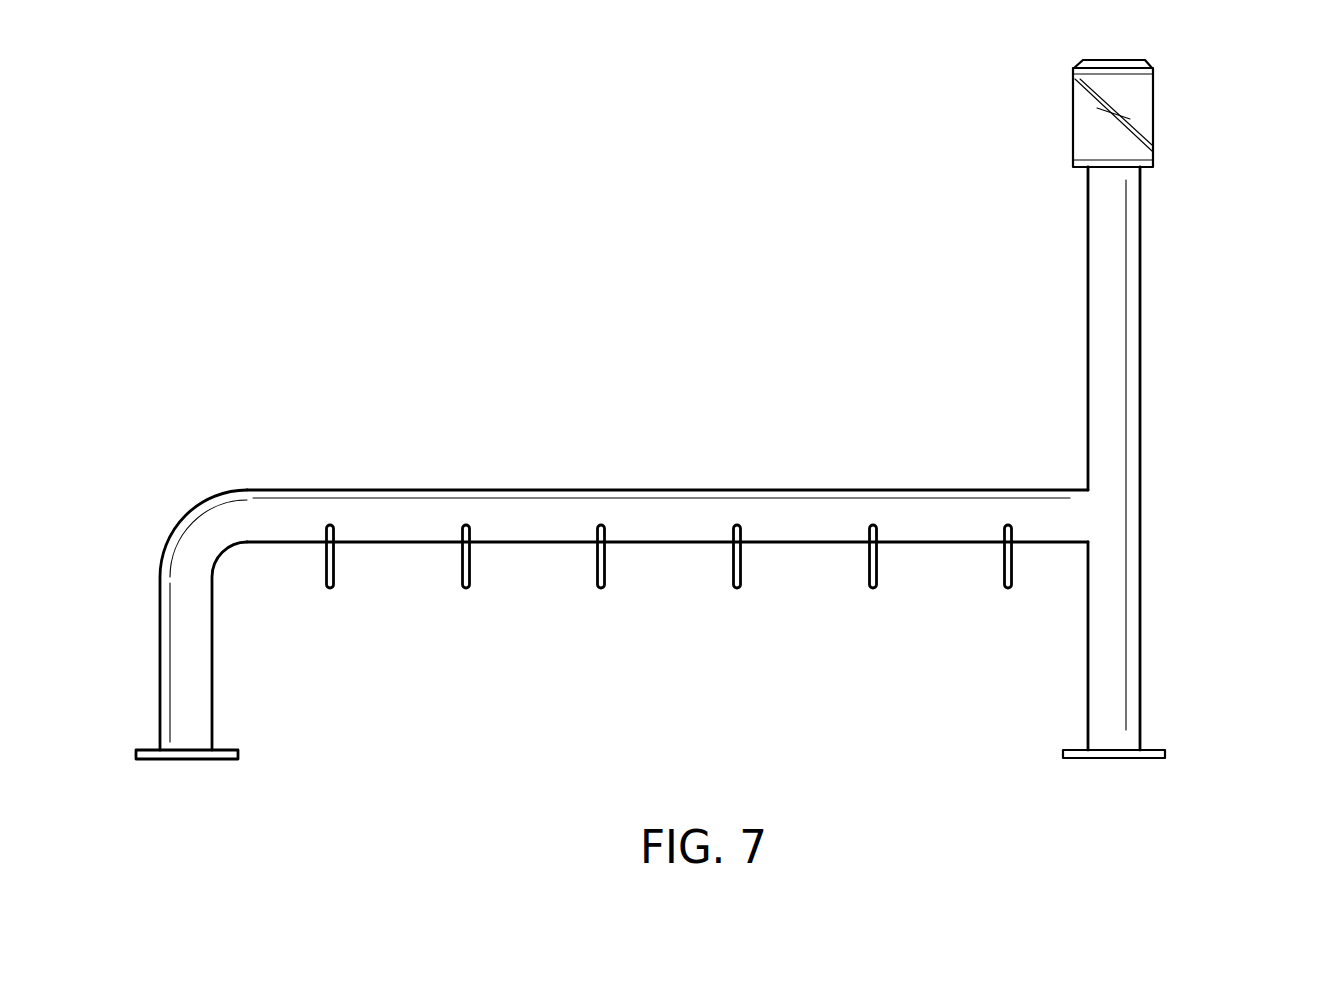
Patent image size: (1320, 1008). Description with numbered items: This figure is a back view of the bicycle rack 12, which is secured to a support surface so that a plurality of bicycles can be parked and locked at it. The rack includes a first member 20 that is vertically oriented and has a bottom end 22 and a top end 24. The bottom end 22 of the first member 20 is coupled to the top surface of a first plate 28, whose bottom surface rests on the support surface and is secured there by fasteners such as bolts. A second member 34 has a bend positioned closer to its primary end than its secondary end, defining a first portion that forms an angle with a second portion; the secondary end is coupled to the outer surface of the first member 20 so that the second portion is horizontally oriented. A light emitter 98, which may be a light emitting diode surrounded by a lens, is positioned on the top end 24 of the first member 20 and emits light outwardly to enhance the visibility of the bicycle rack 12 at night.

The bicycle rack 12 is at (185, 516).
The second member 34 is at (755, 490).
The first member 20 is at (1140, 385).
The top end 24 is at (1108, 166).
The light emitter 98 is at (1130, 107).
The first plate 28 is at (1163, 750).
The bottom end 22 is at (1117, 752).